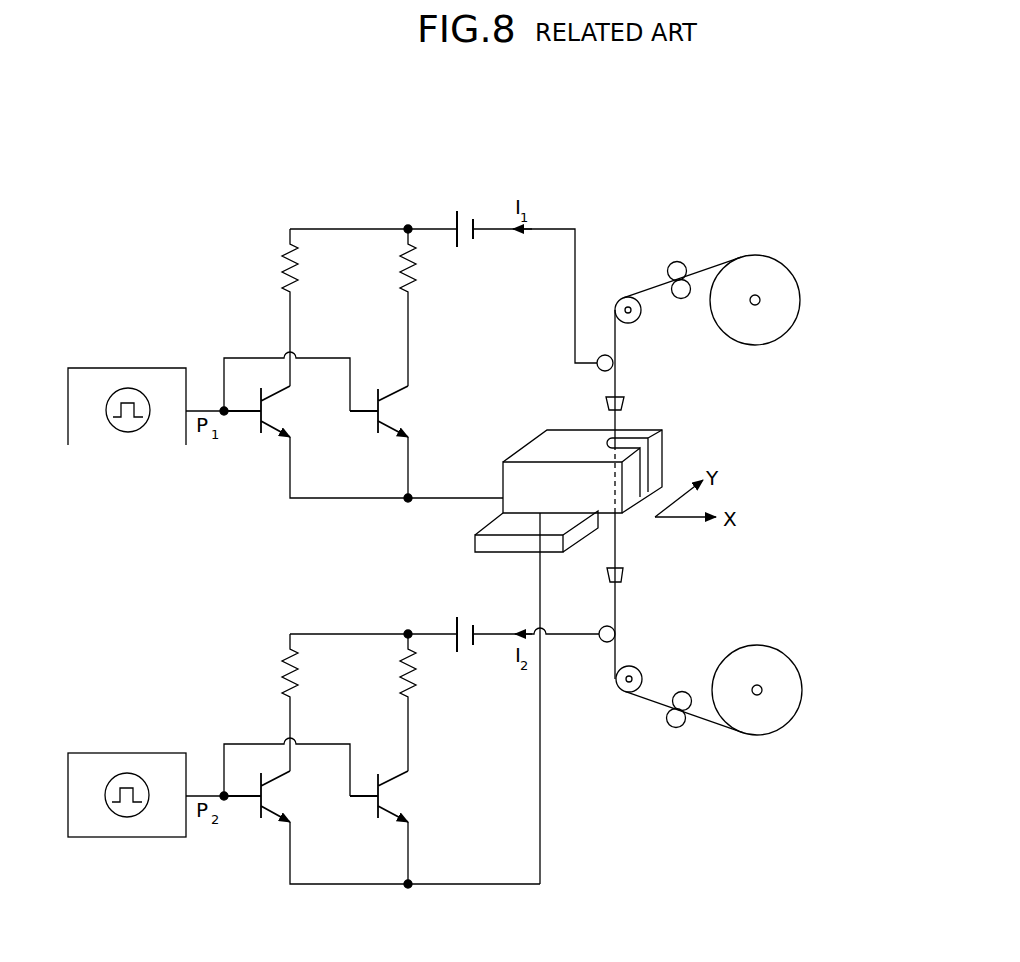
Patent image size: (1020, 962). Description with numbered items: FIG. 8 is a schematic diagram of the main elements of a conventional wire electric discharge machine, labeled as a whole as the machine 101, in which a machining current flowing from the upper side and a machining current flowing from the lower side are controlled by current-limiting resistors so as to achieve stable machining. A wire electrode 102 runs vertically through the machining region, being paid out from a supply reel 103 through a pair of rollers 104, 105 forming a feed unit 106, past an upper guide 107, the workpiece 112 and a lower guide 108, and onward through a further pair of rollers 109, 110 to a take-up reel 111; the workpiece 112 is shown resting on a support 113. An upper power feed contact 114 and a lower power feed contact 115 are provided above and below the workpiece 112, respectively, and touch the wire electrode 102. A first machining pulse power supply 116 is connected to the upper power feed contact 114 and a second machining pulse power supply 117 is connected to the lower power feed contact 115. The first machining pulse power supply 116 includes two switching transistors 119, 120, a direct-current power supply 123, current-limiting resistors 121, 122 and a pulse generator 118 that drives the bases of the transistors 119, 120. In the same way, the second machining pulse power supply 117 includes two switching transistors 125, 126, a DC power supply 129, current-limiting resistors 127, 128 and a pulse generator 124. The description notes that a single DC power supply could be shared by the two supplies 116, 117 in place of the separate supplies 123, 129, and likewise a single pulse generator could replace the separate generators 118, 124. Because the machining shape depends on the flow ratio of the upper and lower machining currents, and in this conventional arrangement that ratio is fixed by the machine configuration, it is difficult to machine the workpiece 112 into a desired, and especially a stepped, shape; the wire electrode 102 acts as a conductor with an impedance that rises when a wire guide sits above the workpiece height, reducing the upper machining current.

The thermal transfer printing apparatus 101 is at (631, 163).
The wire electrode 102 is at (618, 376).
The supply reel 103 is at (785, 280).
The feed roller 104 is at (683, 299).
The feed roller 105 is at (680, 262).
The feed roller pair 106 is at (660, 258).
The guide 107 is at (625, 404).
The guide 108 is at (626, 572).
The take-up roller 109 is at (682, 692).
The take-up roller 110 is at (674, 730).
The take-up reel 111 is at (788, 676).
The workpiece 112 is at (537, 440).
The platen 113 is at (473, 530).
The upper power feed contact 114 is at (598, 370).
The lower power feed contact 115 is at (602, 643).
The first machining pulse power supply 116 is at (281, 203).
The second machining pulse power supply 117 is at (250, 638).
The pulse generator 118 is at (129, 367).
The switching transistor 119 is at (272, 415).
The switching transistor 120 is at (392, 413).
The current-limiting resistor 121 is at (281, 277).
The current-limiting resistor 122 is at (400, 277).
The direct-current power supply 123 is at (458, 210).
The pulse generator 124 is at (125, 752).
The switching transistor 125 is at (272, 800).
The switching transistor 126 is at (392, 800).
The current-limiting resistor 127 is at (281, 679).
The current-limiting resistor 128 is at (400, 679).
The DC power supply 129 is at (458, 620).